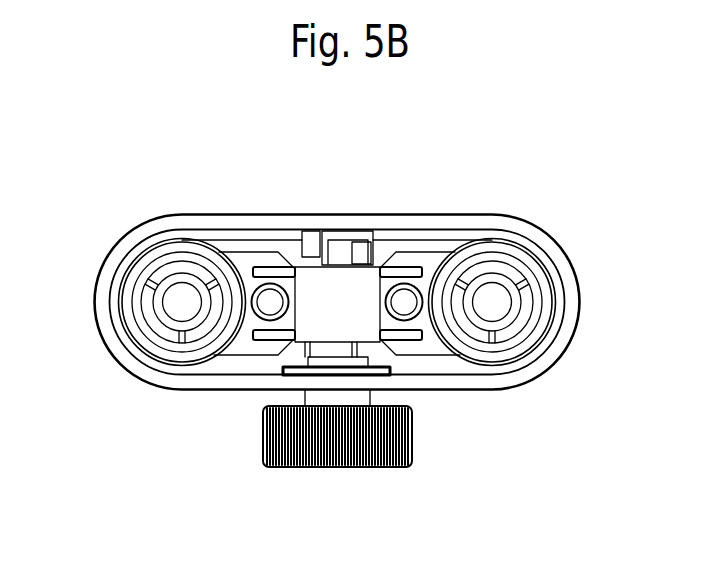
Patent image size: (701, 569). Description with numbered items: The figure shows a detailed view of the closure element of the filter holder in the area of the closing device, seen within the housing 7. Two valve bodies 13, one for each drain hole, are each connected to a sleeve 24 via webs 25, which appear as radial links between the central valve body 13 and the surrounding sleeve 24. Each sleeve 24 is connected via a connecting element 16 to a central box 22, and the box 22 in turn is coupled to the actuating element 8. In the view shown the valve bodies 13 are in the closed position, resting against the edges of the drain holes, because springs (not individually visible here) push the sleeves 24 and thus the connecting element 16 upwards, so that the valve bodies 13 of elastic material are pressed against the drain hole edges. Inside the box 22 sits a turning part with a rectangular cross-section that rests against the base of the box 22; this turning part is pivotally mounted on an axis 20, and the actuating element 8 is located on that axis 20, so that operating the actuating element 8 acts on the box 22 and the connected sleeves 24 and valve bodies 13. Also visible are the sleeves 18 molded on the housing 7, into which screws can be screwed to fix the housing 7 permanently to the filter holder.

The housing 7 is at (553, 340).
The actuating element 8 is at (369, 445).
The valve body 13 is at (177, 308).
The connecting element 16 is at (407, 260).
The sleeves 18 is at (397, 300).
The axis 20 is at (353, 397).
The box 22 is at (307, 308).
The sleeve 24 is at (140, 277).
The webs 25 is at (153, 273).